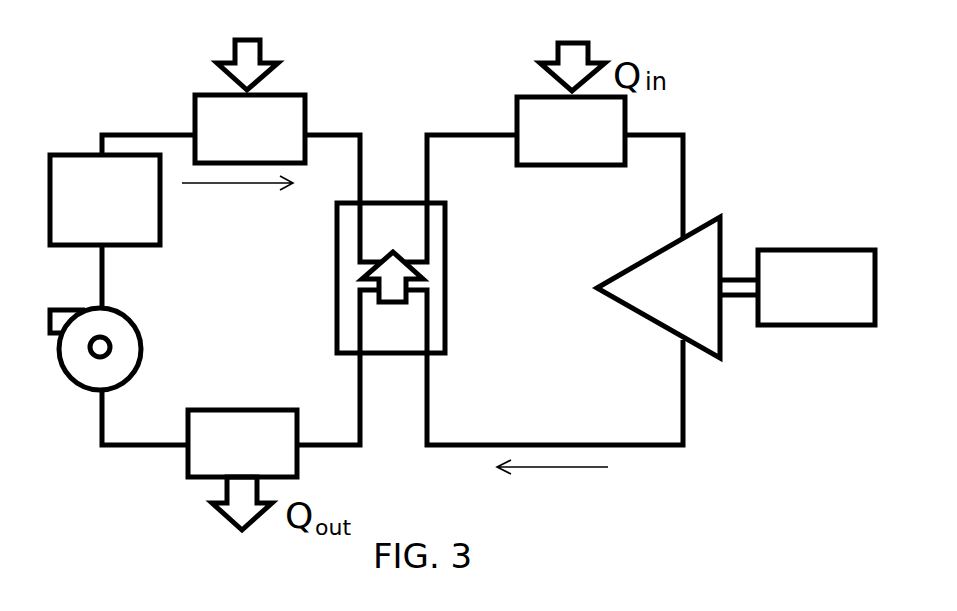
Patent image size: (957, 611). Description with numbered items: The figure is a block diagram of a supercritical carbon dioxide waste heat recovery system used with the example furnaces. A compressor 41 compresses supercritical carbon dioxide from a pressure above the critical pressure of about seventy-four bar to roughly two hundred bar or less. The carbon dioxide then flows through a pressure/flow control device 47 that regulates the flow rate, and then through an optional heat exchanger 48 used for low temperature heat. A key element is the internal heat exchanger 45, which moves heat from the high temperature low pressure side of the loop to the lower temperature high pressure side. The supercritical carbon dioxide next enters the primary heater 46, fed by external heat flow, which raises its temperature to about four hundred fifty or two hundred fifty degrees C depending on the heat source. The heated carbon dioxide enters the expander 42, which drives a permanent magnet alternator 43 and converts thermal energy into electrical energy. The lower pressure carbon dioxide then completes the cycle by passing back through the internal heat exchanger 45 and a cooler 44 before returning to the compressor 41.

The compressor 41 is at (92, 362).
The expander 42 is at (693, 252).
The permanent magnet alternator 43 is at (798, 275).
The cooler 44 is at (240, 440).
The internal heat exchanger 45 is at (402, 228).
The primary heater 46 is at (563, 128).
The pressure/flow control device 47 is at (93, 190).
The optional heat exchanger 48 is at (260, 130).